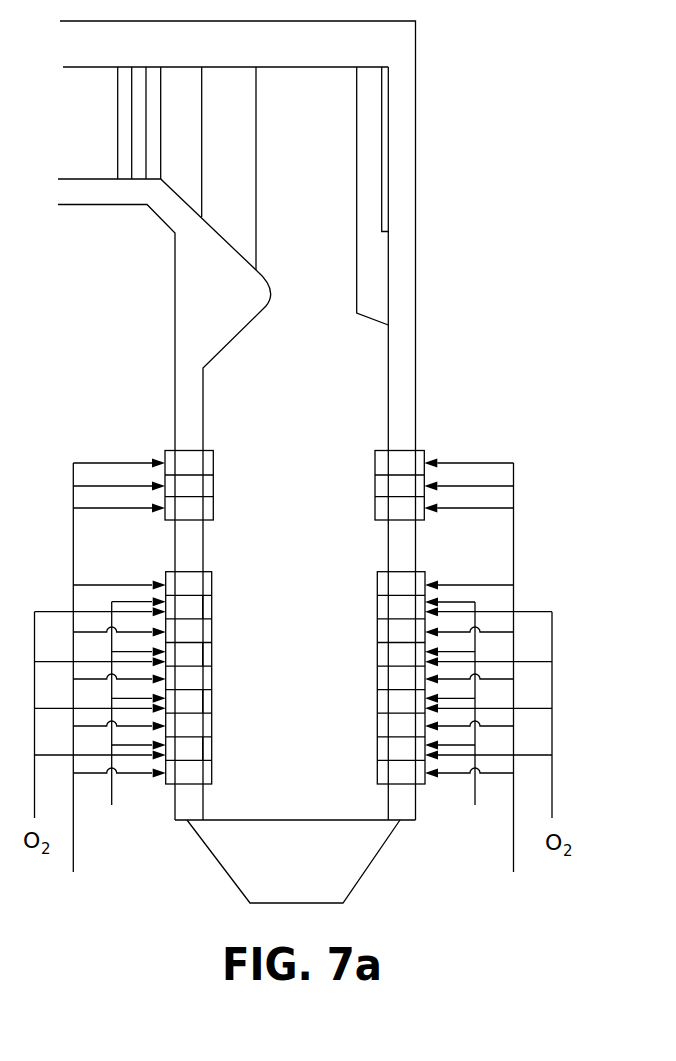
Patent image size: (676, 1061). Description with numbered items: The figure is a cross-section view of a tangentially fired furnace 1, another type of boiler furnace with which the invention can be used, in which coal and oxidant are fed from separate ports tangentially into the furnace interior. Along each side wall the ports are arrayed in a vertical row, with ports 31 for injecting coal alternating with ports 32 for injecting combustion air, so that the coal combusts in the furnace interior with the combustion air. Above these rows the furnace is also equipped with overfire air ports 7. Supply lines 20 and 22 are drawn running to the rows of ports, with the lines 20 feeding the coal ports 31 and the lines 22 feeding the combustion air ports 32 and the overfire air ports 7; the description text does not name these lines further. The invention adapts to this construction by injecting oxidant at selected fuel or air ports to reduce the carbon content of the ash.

The tangentially fired furnace 1 is at (421, 161).
The overfire air ports 7 is at (213, 483).
The fuel supply lines 20 is at (296, 716).
The air supply lines 22 is at (295, 681).
The ports for injecting coal 31 is at (213, 602).
The ports for injecting combustion air 32 is at (213, 577).